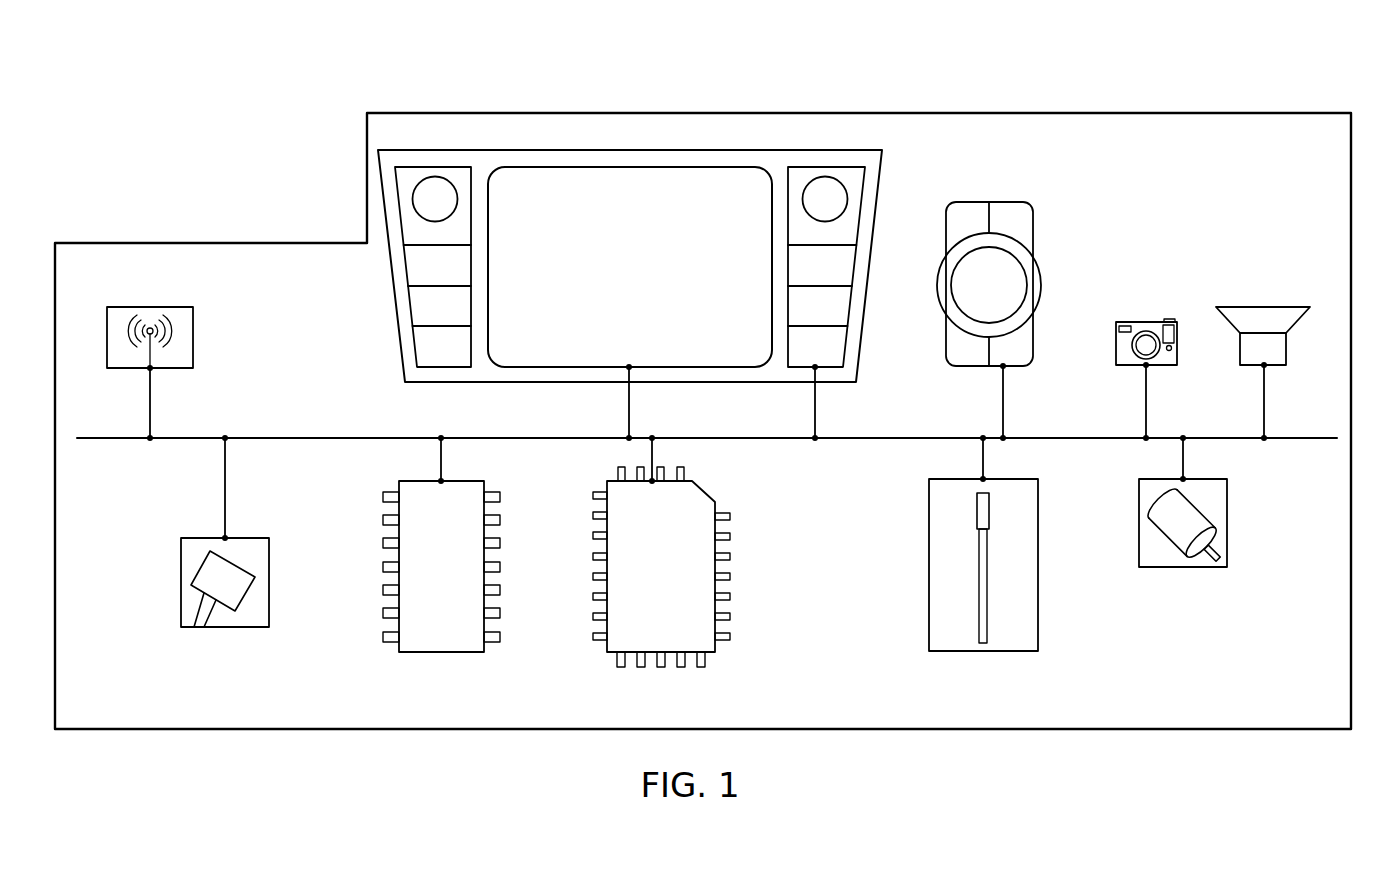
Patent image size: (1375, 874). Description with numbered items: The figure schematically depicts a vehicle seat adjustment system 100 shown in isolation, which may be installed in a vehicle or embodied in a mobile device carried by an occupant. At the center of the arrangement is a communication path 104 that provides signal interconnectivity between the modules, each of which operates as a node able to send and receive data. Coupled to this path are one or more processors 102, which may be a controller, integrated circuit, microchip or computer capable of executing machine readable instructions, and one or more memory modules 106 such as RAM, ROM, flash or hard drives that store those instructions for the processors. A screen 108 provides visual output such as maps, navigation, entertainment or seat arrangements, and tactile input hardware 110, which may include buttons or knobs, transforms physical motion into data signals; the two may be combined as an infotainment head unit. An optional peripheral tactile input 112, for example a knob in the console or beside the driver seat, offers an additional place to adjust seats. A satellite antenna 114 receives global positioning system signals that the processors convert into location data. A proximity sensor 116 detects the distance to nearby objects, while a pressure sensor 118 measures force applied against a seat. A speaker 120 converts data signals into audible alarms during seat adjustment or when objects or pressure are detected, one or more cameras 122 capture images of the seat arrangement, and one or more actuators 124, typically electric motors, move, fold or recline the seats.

The vehicle seat adjustment system 100 is at (703, 366).
The processors 102 is at (610, 652).
The communication path 104 is at (345, 440).
The memory modules 106 is at (443, 652).
The screen 108 is at (617, 188).
The tactile input hardware 110 is at (630, 258).
The peripheral tactile input 112 is at (979, 202).
The satellite antenna 114 is at (983, 651).
The proximity sensor 116 is at (150, 307).
The pressure sensor 118 is at (228, 627).
The speaker 120 is at (1262, 307).
The cameras 122 is at (1148, 322).
The actuators 124 is at (1183, 567).